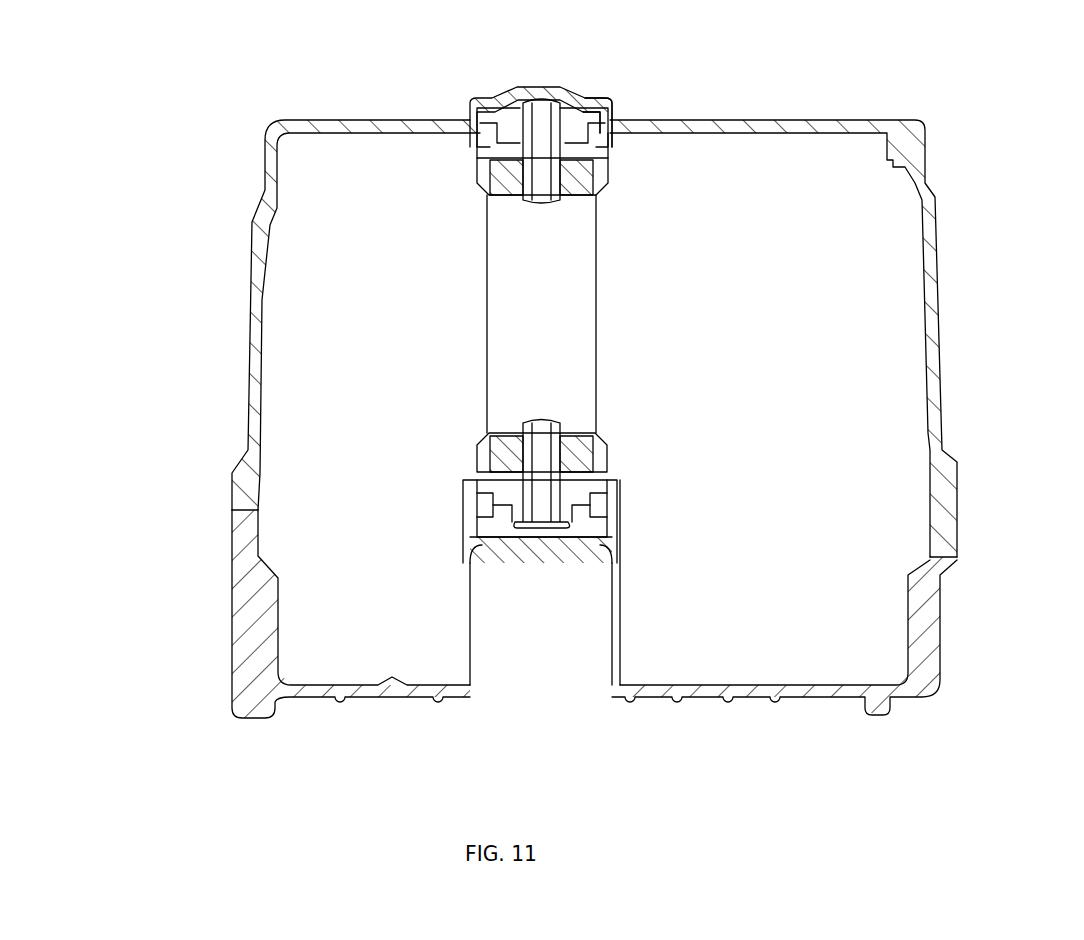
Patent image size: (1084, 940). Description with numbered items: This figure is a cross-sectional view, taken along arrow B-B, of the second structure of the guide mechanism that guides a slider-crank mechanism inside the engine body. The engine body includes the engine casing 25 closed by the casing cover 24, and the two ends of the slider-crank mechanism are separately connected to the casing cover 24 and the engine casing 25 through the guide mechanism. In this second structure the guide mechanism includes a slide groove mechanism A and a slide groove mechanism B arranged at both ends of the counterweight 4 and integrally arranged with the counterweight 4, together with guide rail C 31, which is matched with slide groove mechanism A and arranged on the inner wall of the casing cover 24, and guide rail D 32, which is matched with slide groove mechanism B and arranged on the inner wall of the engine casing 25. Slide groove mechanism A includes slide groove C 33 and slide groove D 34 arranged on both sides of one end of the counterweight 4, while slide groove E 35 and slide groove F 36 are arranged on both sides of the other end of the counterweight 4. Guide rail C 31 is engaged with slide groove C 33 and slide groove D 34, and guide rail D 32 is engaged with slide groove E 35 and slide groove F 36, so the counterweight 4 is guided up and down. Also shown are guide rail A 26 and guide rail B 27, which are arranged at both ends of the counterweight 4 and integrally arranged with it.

The counterweight 4 is at (520, 370).
The casing cover 24 is at (262, 620).
The engine casing 25 is at (262, 392).
The guide rail A 26 is at (516, 525).
The guide rail B 27 is at (508, 135).
The guide rail C 31 is at (485, 497).
The guide rail D 32 is at (488, 142).
The slide groove C 33 is at (512, 505).
The slide groove D 34 is at (585, 505).
The slide groove E 35 is at (470, 112).
The slide groove F 36 is at (603, 130).